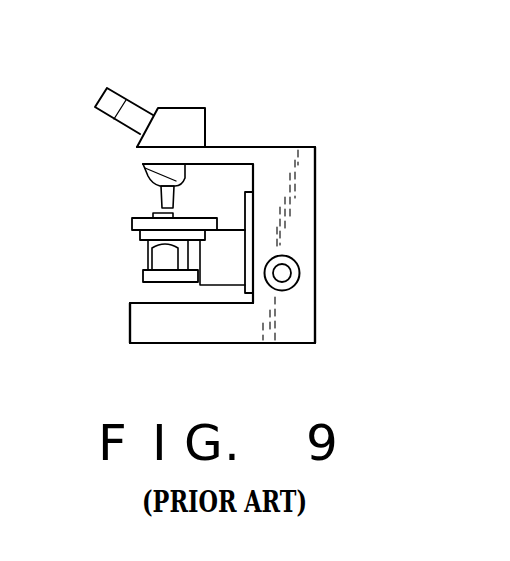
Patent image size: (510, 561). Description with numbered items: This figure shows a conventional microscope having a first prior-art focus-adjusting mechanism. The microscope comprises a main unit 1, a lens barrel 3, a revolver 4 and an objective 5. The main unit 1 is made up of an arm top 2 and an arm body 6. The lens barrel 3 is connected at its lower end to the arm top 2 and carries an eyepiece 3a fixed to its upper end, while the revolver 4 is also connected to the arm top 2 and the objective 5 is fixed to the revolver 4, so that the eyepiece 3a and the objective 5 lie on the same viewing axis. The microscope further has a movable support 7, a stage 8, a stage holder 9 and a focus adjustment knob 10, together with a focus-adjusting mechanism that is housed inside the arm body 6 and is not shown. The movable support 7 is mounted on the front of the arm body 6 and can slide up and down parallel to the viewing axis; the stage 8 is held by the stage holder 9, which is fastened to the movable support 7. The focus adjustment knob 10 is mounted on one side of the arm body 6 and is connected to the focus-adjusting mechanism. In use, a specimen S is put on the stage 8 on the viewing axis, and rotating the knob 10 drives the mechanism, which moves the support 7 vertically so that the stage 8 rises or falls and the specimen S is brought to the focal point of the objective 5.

The main unit 1 is at (318, 146).
The arm top 2 is at (225, 156).
The lens barrel 3 is at (193, 131).
The eyepiece 3a is at (120, 93).
The revolver 4 is at (158, 160).
The objective 5 is at (160, 196).
The specimen S is at (153, 215).
The arm body 6 is at (315, 247).
The movable support 7 is at (250, 227).
The stage 8 is at (133, 224).
The stage holder 9 is at (217, 273).
The focus adjustment knob 10 is at (291, 274).